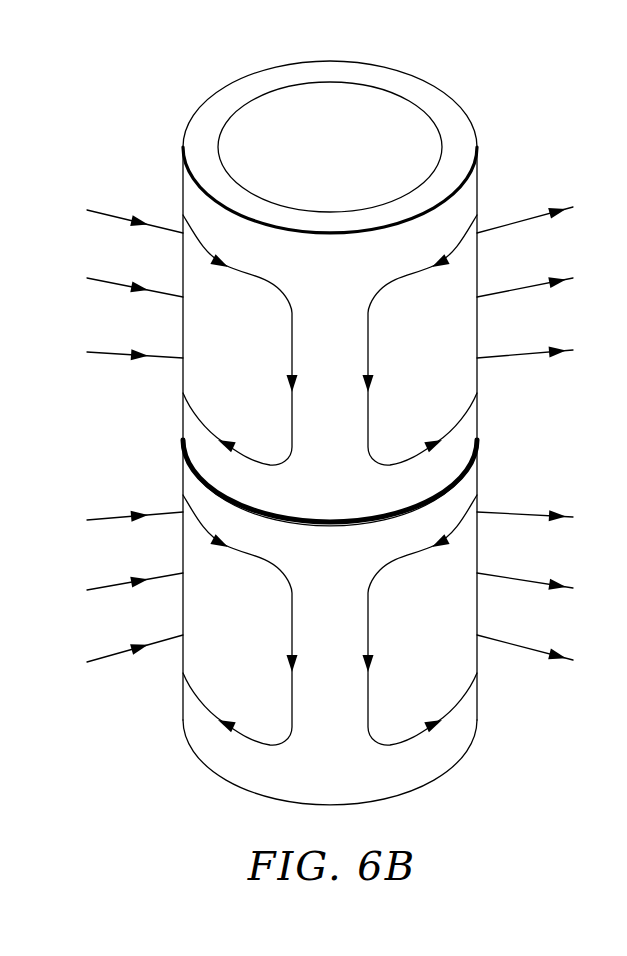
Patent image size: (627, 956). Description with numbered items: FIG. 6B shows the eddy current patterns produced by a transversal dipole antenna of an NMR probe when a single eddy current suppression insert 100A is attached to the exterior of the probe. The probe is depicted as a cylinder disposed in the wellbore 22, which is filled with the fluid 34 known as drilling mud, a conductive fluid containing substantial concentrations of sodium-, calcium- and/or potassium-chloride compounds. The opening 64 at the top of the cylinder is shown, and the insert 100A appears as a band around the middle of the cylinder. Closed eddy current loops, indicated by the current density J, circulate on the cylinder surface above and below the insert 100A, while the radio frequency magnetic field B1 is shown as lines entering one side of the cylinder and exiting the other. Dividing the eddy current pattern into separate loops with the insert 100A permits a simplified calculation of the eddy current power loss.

The wellbore 22 is at (218, 93).
The fluid 34 is at (437, 102).
The coil bore 64 is at (267, 92).
The insert 100A is at (317, 516).
The current density J is at (368, 337).
The RF magnetic field B1 is at (604, 587).